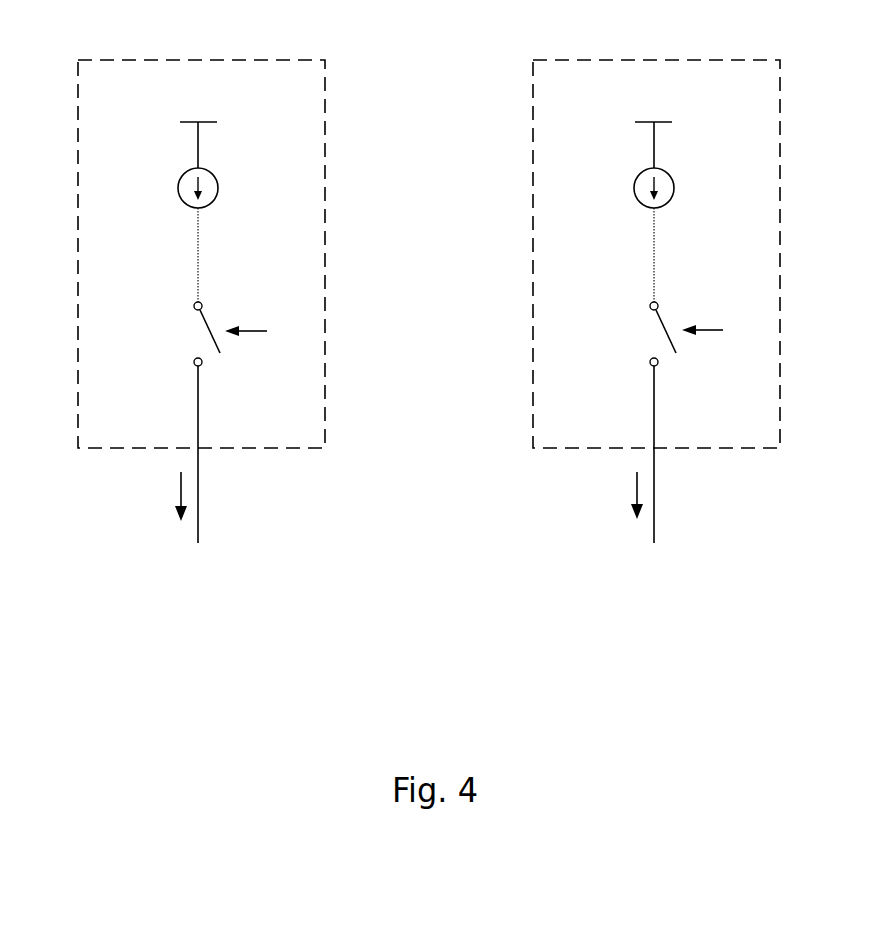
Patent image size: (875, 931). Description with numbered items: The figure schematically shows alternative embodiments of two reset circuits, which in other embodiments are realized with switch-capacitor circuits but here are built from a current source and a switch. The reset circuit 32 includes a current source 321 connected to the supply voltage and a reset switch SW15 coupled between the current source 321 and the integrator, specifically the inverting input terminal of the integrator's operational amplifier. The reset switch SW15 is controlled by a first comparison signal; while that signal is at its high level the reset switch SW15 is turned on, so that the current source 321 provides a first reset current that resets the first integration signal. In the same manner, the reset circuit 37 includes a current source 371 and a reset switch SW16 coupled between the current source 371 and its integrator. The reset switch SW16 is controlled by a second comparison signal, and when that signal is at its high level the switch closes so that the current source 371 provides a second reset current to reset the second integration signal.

The reset circuit 32 is at (226, 301).
The reset circuit 37 is at (682, 301).
The current source 321 is at (218, 186).
The current source 371 is at (674, 186).
The reset switch SW15 is at (171, 334).
The reset switch SW16 is at (627, 334).